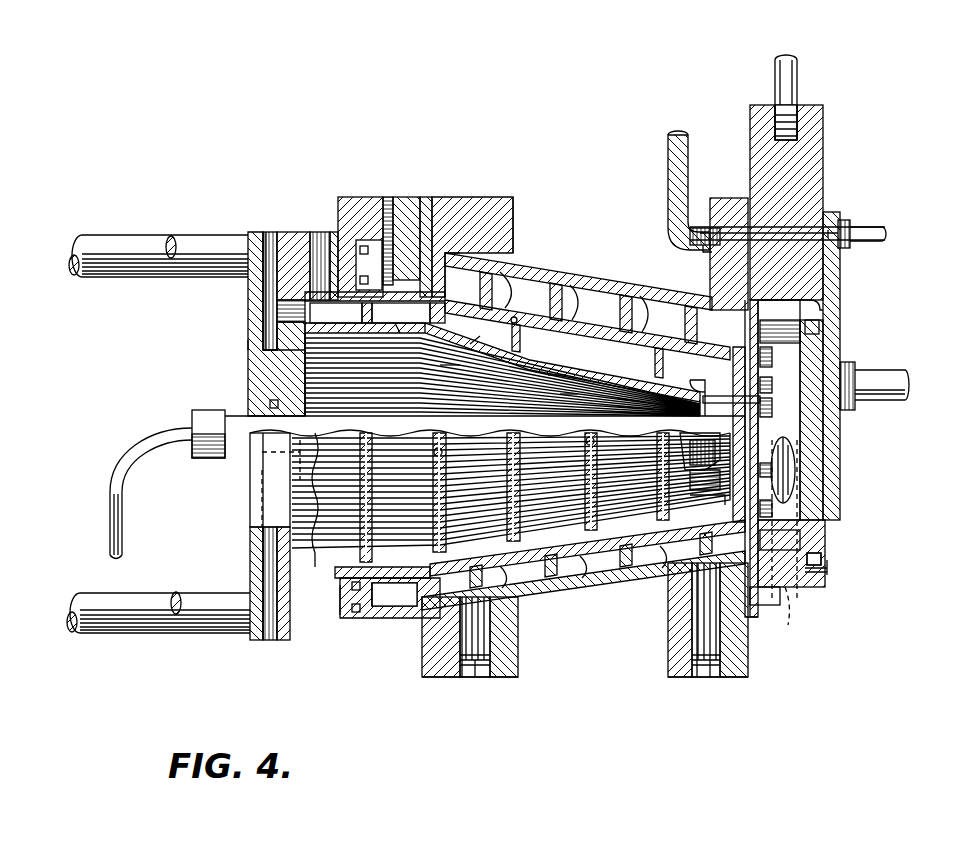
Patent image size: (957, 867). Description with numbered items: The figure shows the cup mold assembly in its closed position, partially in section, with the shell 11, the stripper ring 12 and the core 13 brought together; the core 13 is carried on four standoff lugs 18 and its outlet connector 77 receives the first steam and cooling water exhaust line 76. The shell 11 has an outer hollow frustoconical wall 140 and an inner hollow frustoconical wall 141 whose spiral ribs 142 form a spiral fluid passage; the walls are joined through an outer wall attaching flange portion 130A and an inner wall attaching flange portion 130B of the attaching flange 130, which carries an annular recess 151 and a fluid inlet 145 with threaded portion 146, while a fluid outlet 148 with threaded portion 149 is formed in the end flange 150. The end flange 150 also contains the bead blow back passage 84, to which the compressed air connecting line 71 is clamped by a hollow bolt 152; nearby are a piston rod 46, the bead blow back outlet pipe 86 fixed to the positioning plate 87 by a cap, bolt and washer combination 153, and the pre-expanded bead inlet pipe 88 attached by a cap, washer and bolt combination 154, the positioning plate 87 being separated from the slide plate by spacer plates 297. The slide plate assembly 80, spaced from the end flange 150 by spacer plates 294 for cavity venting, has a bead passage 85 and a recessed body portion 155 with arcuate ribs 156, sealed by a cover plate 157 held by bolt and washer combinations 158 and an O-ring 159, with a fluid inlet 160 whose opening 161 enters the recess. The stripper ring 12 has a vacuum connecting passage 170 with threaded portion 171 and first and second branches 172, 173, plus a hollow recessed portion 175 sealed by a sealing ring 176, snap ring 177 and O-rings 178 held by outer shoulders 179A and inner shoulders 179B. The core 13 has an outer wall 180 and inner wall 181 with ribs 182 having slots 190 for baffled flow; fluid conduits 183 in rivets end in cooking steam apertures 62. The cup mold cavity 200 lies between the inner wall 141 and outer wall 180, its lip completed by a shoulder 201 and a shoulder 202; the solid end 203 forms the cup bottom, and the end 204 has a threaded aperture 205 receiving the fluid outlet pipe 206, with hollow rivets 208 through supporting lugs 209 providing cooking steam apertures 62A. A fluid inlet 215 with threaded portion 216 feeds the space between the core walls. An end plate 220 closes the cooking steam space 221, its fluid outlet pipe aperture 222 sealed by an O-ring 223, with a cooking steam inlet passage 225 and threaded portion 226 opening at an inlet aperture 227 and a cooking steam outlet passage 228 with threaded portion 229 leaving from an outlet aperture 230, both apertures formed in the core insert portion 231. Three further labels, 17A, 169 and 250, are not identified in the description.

The shell portion 11 is at (516, 250).
The stripper ring 12 is at (402, 197).
The core 13 is at (240, 346).
The bore 17A is at (440, 262).
The standoff lugs 18 is at (187, 235).
The piston rod 46 is at (778, 70).
The cooking steam apertures 62 is at (402, 452).
The cooking steam apertures 62A is at (780, 407).
The compressed air connecting line 71 is at (668, 145).
The first high and low pressure steam and cooling water exhaust line 76 is at (176, 432).
The outlet connector 77 is at (195, 418).
The slide plate assembly 80 is at (823, 120).
The bead blow back passage 84 is at (700, 228).
The bead passage 85 is at (792, 230).
The bead blow back outlet pipe 86 is at (872, 243).
The positioning plate 87 is at (840, 287).
The pre-expanded bead inlet pipe 88 is at (888, 400).
The attaching flange 130 is at (448, 196).
The outer wall attaching flange portion 130A is at (480, 197).
The inner wall attaching flange portion 130B is at (428, 197).
The outer hollow frustoconical wall 140 is at (540, 268).
The inner hollow frustoconical wall 141 is at (530, 300).
The spiral ribs 142 is at (568, 278).
The fluid inlet 145 is at (476, 680).
The threaded portion 146 is at (463, 678).
The fluid outlet 148 is at (714, 680).
The threaded portion 149 is at (700, 680).
The end flange 150 is at (728, 198).
The annular recess 151 is at (430, 272).
The hollow bolt 152 is at (703, 250).
The cap, bolt and washer combination 153 is at (850, 225).
The cap, washer and bolt combination 154 is at (852, 366).
The recessed body portion 155 is at (812, 440).
The arcuate ribs 156 is at (770, 380).
The cover plate 157 is at (820, 490).
The bolt and washer combinations 158 is at (832, 570).
The O-ring 159 is at (810, 587).
The fluid inlet 160 is at (795, 612).
The opening 161 is at (792, 460).
The seal 169 is at (405, 333).
The vacuum connecting passage 170 is at (348, 200).
The threaded portion 171 is at (388, 200).
The first branch 172 is at (377, 313).
The second branch 173 is at (425, 333).
The hollow recessed portion 175 is at (405, 620).
The sealing ring 176 is at (354, 620).
The snap ring 177 is at (350, 620).
The O-rings 178 is at (394, 594).
The outer shoulders 179A is at (338, 600).
The inner shoulders 179B is at (380, 575).
The outer wall 180 is at (539, 371).
The inner wall 181 is at (578, 388).
The ribs 182 is at (595, 455).
The fluid conduits 183 is at (498, 350).
The slots 190 is at (668, 478).
The cup mold cavity 200 is at (588, 306).
The shoulder 201 is at (455, 553).
The shoulder 202 is at (432, 570).
The solid end 203 is at (735, 510).
The end 204 is at (720, 478).
The threaded aperture 205 is at (690, 433).
The fluid outlet pipe 206 is at (352, 430).
The hollow rivets 208 is at (700, 399).
The supporting lugs 209 is at (780, 510).
The fluid inlet 215 is at (300, 232).
The threaded portion 216 is at (322, 232).
The end plate 220 is at (248, 302).
The cooking steam space 221 is at (295, 376).
The fluid outlet pipe aperture 222 is at (270, 402).
The O-ring 223 is at (305, 396).
The cooking steam inlet passage 225 is at (270, 290).
The threaded portion 226 is at (268, 232).
The inlet aperture 227 is at (285, 345).
The cooking steam outlet passage 228 is at (252, 540).
The threaded portion 229 is at (265, 593).
The outlet aperture 230 is at (300, 500).
The core insert portion 231 is at (326, 374).
The seal face 250 is at (290, 283).
The spacer plates 294 is at (820, 302).
The spacer plates 297 is at (830, 228).